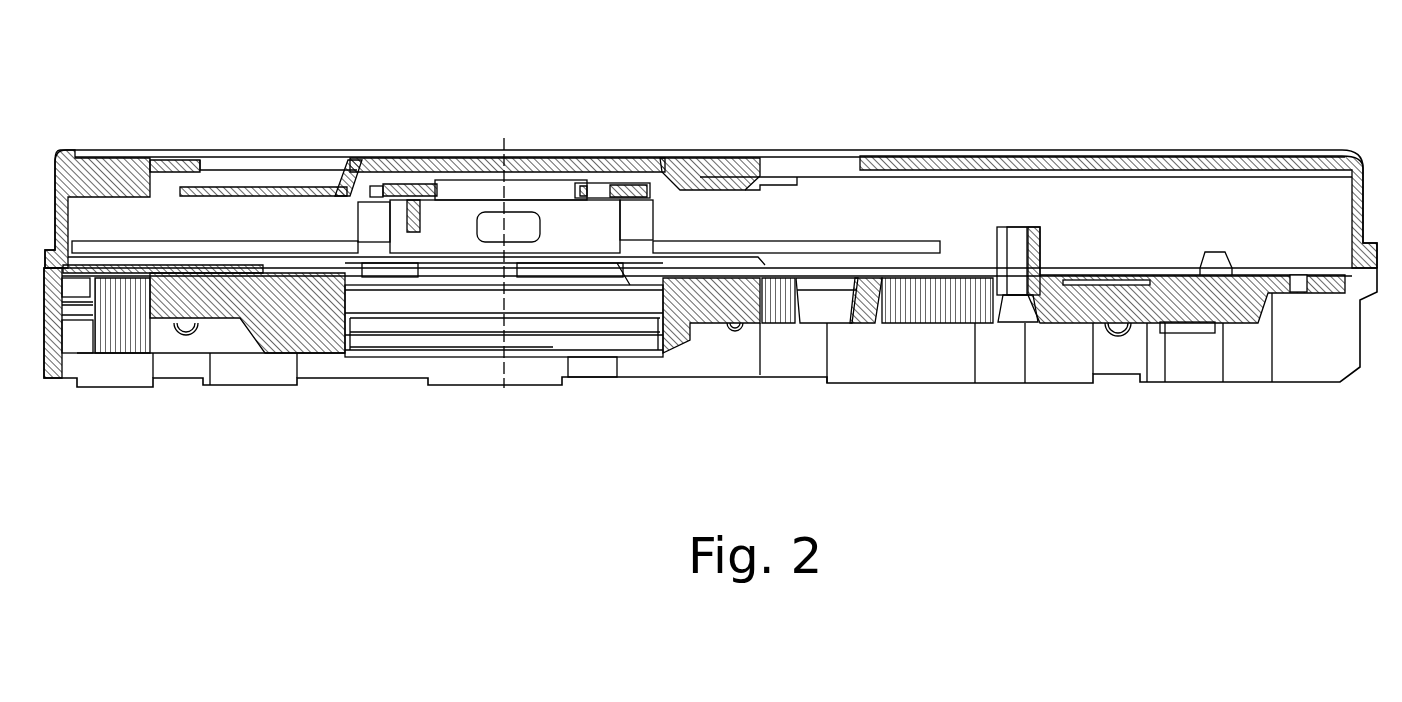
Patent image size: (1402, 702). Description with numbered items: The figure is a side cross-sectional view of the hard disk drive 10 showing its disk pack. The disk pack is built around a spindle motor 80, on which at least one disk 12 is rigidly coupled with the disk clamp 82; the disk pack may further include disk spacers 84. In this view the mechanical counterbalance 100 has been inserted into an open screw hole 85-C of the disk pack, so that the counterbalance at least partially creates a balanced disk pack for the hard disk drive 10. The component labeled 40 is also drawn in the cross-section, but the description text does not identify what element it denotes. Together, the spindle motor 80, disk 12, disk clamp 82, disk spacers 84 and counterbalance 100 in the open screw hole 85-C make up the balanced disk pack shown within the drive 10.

The hard disk drive 10 is at (1373, 127).
The disk 12 is at (876, 240).
The pivot post / actuator bearing 40 is at (1042, 223).
The spindle motor 80 is at (665, 397).
The disk clamp 82 is at (348, 185).
The disk spacers 84 is at (357, 234).
The open screw hole 85-C is at (358, 218).
The mechanical counterbalance 100 is at (423, 210).